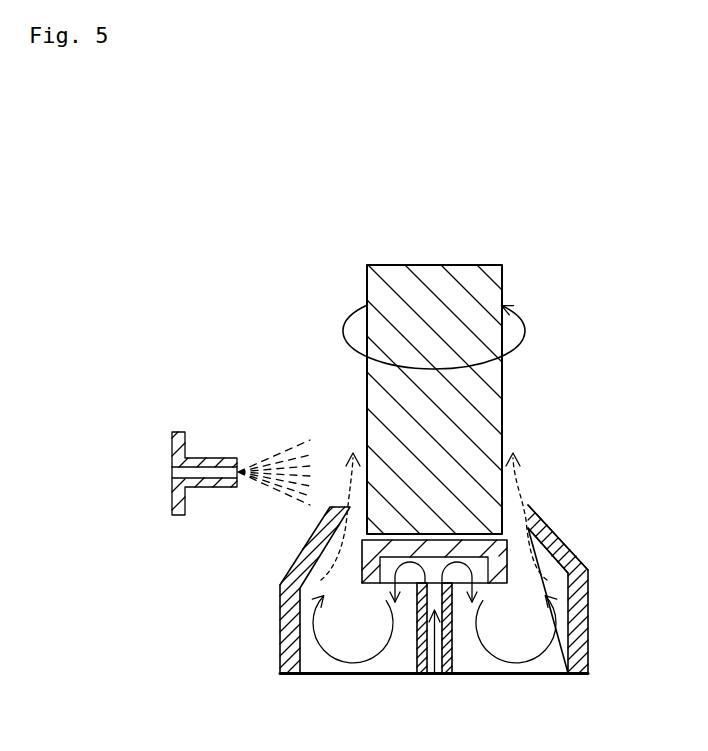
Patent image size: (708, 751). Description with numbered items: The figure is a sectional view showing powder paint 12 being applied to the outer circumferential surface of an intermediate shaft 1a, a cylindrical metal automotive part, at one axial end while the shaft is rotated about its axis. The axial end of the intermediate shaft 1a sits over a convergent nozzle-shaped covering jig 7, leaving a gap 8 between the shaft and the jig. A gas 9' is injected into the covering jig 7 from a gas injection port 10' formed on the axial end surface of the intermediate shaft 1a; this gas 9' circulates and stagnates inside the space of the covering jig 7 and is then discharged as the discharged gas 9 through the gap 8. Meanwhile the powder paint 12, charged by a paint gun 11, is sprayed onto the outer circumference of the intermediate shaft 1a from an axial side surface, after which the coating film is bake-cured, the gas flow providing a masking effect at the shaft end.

The intermediate shaft 1a is at (322, 312).
The paint gun 11 is at (207, 458).
The powder paint 12 is at (277, 456).
The covering jig 7 is at (572, 562).
The gap 8 is at (527, 505).
The discharged gas 9 is at (466, 499).
The gas injection port 10' is at (382, 655).
The injected gas 9' is at (448, 659).